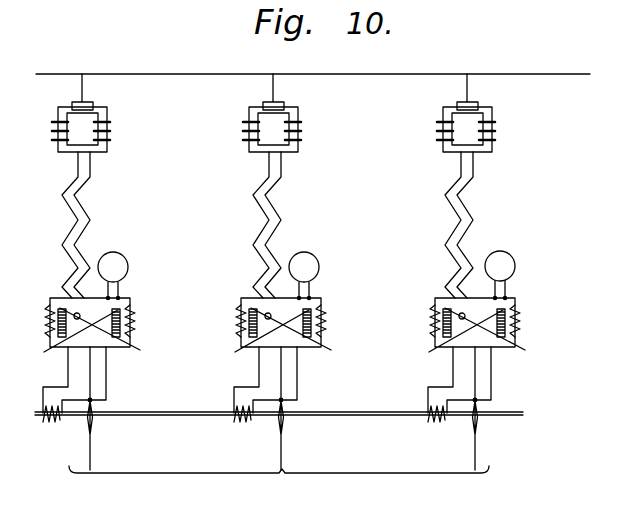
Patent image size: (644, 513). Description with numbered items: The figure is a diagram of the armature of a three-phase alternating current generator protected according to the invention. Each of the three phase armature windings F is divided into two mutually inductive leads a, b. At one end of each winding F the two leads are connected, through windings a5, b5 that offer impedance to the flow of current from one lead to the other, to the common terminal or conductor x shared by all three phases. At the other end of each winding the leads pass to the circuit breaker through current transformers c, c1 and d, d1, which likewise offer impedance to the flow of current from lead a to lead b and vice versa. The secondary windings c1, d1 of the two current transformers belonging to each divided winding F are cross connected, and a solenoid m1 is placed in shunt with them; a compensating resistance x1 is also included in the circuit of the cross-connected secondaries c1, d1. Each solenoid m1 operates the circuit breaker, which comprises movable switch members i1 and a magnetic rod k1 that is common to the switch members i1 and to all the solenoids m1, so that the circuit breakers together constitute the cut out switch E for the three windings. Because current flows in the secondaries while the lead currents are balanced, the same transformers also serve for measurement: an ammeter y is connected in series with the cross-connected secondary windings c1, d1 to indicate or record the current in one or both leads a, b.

The common terminal or conductor x is at (183, 75).
The impedance winding a5 is at (254, 113).
The impedance winding b5 is at (311, 123).
The lead a is at (243, 225).
The lead b is at (283, 225).
The phase armature winding F is at (301, 229).
The ammeter y is at (316, 263).
The compensating resistance x1 is at (284, 349).
The current transformer primary c is at (234, 320).
The current transformer primary d is at (335, 320).
The secondary winding c1 is at (234, 337).
The secondary winding d1 is at (337, 337).
The magnetic rod k1 is at (279, 398).
The solenoid m1 is at (245, 431).
The movable switch member i1 is at (302, 408).
The cut out switch E is at (279, 488).